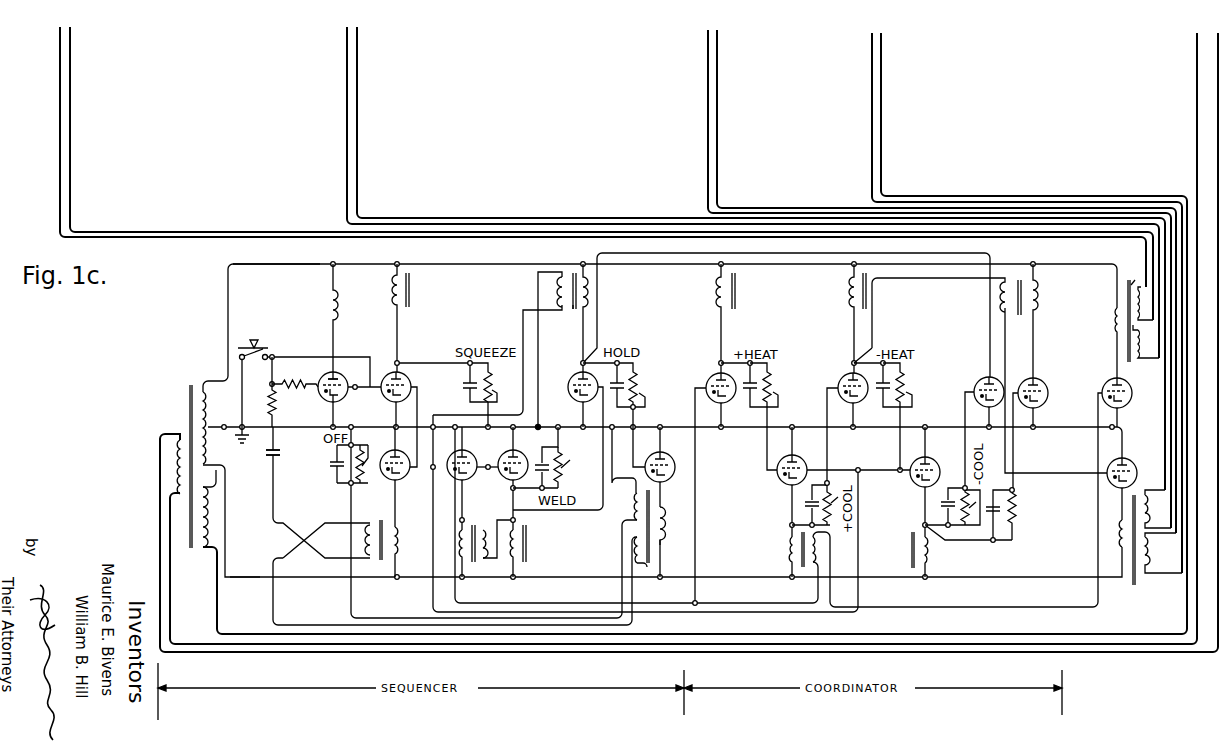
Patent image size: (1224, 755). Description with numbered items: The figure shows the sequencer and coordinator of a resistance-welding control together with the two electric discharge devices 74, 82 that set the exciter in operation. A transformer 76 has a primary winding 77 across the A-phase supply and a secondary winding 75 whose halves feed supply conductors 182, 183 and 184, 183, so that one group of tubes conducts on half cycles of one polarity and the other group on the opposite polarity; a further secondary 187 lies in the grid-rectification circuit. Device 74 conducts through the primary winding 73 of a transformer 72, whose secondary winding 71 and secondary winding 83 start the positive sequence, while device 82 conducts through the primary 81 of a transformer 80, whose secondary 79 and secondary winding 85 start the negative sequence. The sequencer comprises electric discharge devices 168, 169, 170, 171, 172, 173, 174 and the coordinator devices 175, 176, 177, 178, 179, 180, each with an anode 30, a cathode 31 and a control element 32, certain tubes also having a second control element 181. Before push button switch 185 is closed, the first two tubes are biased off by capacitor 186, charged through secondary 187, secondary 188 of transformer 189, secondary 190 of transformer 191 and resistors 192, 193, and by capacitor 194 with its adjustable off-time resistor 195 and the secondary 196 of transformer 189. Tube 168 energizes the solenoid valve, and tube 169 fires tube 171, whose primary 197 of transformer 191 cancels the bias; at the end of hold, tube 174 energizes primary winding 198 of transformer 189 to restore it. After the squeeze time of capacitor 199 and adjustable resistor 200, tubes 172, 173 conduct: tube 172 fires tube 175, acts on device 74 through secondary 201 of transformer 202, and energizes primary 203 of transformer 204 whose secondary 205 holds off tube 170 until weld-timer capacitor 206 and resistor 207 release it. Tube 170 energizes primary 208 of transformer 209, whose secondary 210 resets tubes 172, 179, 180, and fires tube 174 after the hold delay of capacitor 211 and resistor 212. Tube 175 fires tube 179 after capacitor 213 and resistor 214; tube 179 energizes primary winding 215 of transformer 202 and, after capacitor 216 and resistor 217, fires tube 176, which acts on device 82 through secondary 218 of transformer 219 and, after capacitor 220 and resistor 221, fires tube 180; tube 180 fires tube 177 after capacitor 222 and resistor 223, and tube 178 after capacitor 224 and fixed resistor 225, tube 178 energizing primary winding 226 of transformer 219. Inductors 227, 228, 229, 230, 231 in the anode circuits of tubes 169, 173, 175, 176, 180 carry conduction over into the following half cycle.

The anode 30 is at (336, 379).
The cathode 31 is at (333, 402).
The control element 32 is at (320, 393).
The secondary winding 71 is at (1134, 279).
The transformer 72 is at (1126, 290).
The primary winding 73 is at (1112, 324).
The electric discharge device 74 is at (1106, 380).
The secondary winding 75 is at (208, 392).
The transformer 76 is at (191, 385).
The primary winding 77 is at (178, 440).
The secondary winding 79 is at (1147, 498).
The transformer 80 is at (1134, 585).
The primary winding 81 is at (1120, 530).
The electric discharge device 82 is at (1130, 460).
The secondary winding 83 is at (1140, 359).
The secondary winding 85 is at (1151, 566).
The electric discharge device 168 is at (326, 374).
The electric discharge device 169 is at (411, 382).
The electric discharge device 170 is at (576, 380).
The electric discharge device 171 is at (403, 480).
The electric discharge device 172 is at (469, 478).
The electric discharge device 173 is at (510, 450).
The electric discharge device 174 is at (670, 447).
The electric discharge device 175 is at (712, 379).
The electric discharge device 176 is at (845, 380).
The electric discharge device 177 is at (980, 380).
The electric discharge device 178 is at (1040, 380).
The electric discharge device 179 is at (800, 453).
The electric discharge device 180 is at (933, 453).
The second control element 181 is at (348, 378).
The supply conductor 182 is at (276, 275).
The supply conductor 183 is at (251, 437).
The supply conductor 184 is at (242, 577).
The push button switch 185 is at (258, 347).
The capacitor 186 is at (266, 455).
The secondary winding 187 is at (205, 548).
The secondary winding 188 is at (638, 563).
The transformer 189 is at (655, 497).
The secondary winding 190 is at (365, 532).
The transformer 191 is at (381, 562).
The resistor 192 is at (268, 399).
The resistor 193 is at (282, 384).
The capacitor 194 is at (330, 464).
The adjustable discharge resistor 195 is at (359, 483).
The secondary winding 196 is at (634, 496).
The primary winding 197 is at (398, 531).
The primary winding 198 is at (662, 540).
The capacitor 199 is at (463, 387).
The adjustable resistor 200 is at (492, 390).
The secondary winding 201 is at (818, 553).
The transformer 202 is at (807, 557).
The primary winding 203 is at (457, 545).
The transformer 204 is at (470, 560).
The secondary winding 205 is at (483, 530).
The capacitor 206 is at (562, 480).
The adjustable discharge resistor 207 is at (575, 453).
The primary winding 208 is at (590, 292).
The transformer 209 is at (572, 314).
The secondary winding 210 is at (549, 303).
The capacitor 211 is at (636, 376).
The adjustable resistor 212 is at (639, 393).
The capacitor 213 is at (766, 374).
The adjustable resistor 214 is at (773, 393).
The primary winding 215 is at (787, 550).
The capacitor 216 is at (805, 515).
The adjustable resistor 217 is at (833, 480).
The secondary winding 218 is at (998, 291).
The transformer 219 is at (1022, 307).
The capacitor 220 is at (908, 377).
The adjustable resistor 221 is at (914, 393).
The capacitor 222 is at (941, 510).
The adjustable resistor 223 is at (967, 522).
The capacitor 224 is at (1020, 493).
The fixed resistor 225 is at (1018, 516).
The primary winding 226 is at (1038, 294).
The inductor 227 is at (393, 297).
The inductor 228 is at (525, 562).
The inductor 229 is at (717, 296).
The inductor 230 is at (850, 295).
The inductor 231 is at (929, 563).